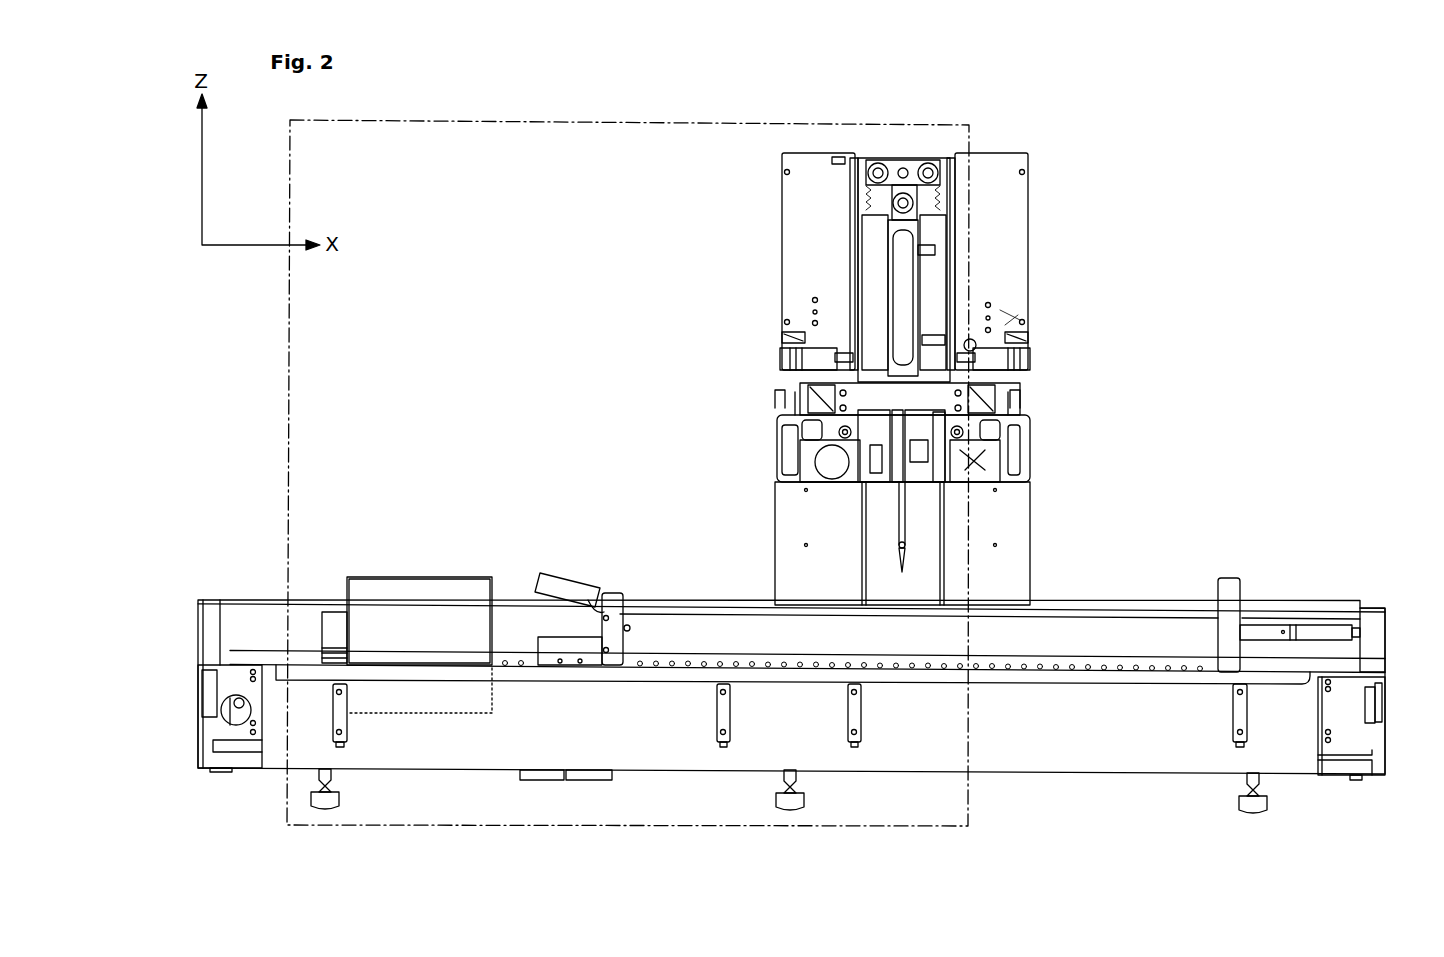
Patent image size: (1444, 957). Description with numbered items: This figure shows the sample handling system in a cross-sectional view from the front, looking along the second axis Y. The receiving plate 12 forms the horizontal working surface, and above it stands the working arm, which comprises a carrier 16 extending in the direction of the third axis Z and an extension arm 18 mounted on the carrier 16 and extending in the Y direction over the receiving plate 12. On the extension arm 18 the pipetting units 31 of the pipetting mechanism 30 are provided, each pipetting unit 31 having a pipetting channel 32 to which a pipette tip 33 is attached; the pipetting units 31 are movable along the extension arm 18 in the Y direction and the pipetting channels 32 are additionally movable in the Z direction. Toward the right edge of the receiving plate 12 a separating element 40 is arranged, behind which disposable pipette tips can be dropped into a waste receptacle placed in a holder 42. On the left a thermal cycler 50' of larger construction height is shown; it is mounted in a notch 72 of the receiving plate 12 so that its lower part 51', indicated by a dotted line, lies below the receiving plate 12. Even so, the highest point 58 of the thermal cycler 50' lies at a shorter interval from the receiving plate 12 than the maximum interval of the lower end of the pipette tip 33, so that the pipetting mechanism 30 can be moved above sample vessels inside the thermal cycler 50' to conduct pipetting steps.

The receiving plate 12 is at (1104, 622).
The carrier 16 is at (1005, 522).
The extension arm 18 is at (1025, 432).
The pipetting mechanism 30 is at (762, 285).
The pipetting unit 31 is at (803, 210).
The pipetting channel 32 is at (897, 515).
The pipette tip 33 is at (897, 547).
The separating element 40 is at (1217, 605).
The holder 42 is at (1330, 628).
The thermal cycler 50' is at (419, 589).
The lower part of the thermal cycler 51' is at (447, 699).
The highest point 58 is at (408, 577).
The notch 72 is at (352, 714).